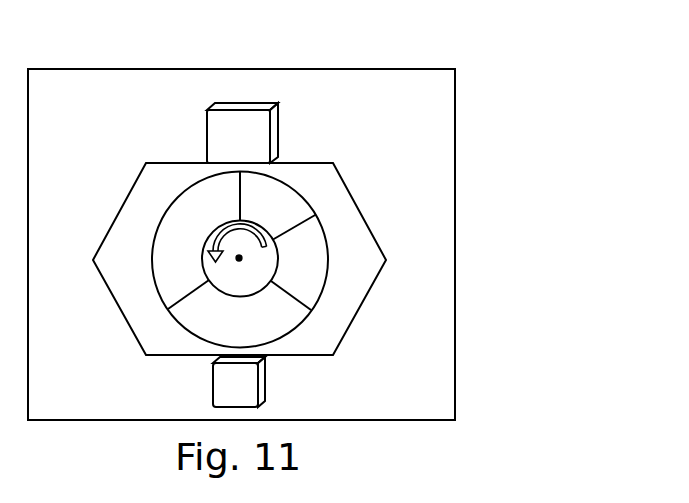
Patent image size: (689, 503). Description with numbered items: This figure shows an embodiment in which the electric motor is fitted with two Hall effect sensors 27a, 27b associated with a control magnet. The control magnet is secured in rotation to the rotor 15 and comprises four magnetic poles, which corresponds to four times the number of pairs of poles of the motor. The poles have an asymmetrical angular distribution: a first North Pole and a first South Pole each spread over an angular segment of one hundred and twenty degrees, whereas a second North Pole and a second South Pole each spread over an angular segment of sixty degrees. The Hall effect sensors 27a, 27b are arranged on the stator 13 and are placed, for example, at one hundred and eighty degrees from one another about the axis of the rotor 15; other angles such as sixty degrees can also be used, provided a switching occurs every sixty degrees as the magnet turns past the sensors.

The stator 13 is at (438, 117).
The rotor 15 is at (241, 257).
The Hall effect sensor 27a is at (250, 130).
The Hall effect sensor 27b is at (242, 378).